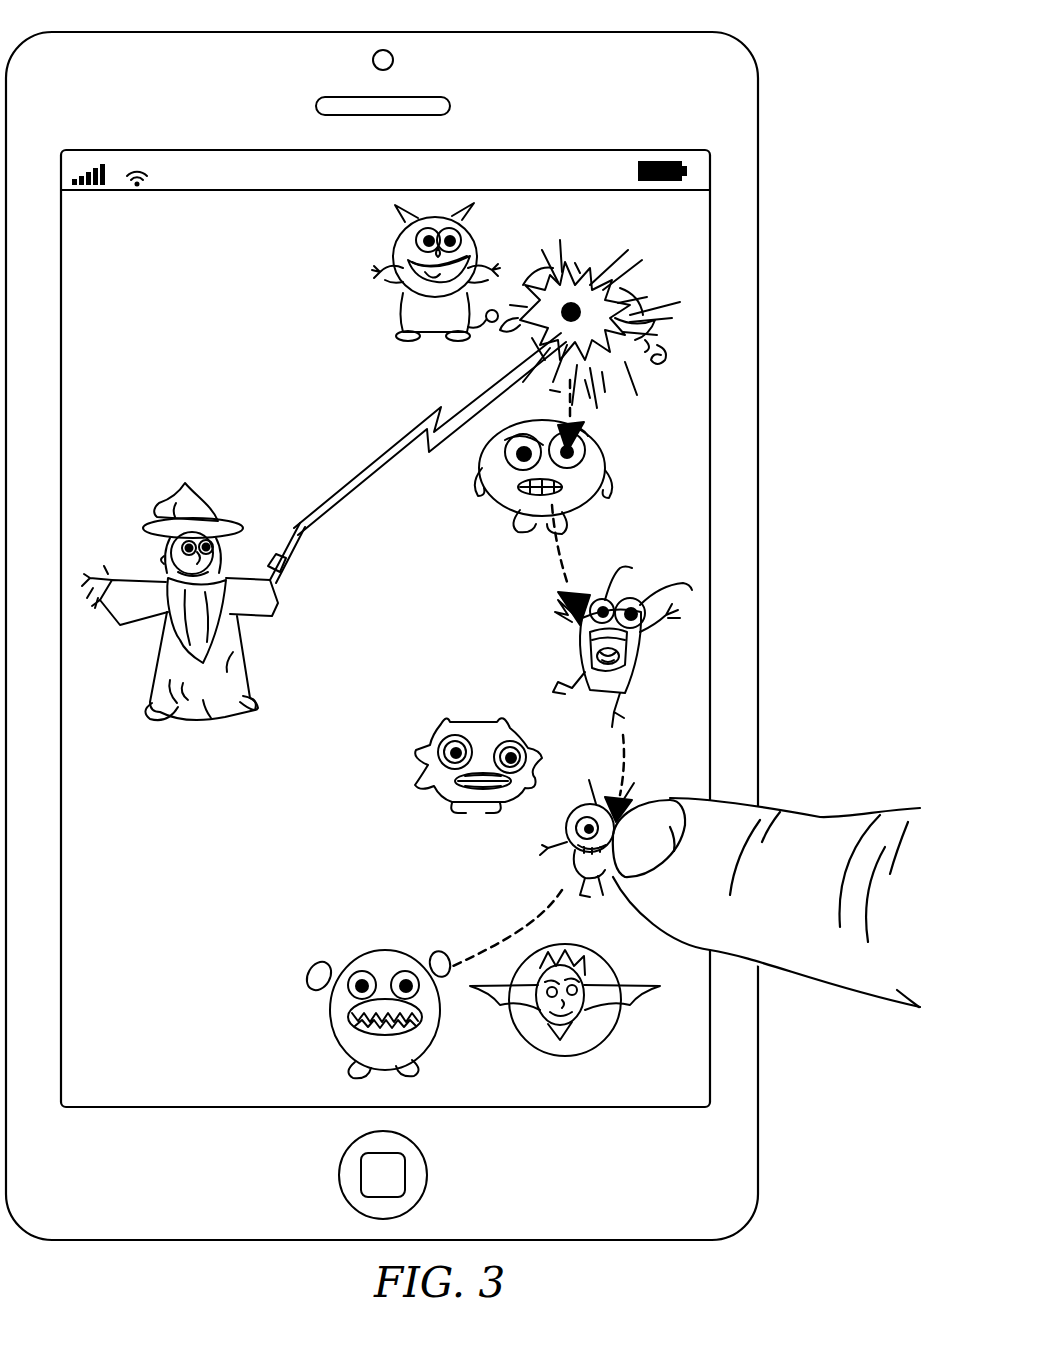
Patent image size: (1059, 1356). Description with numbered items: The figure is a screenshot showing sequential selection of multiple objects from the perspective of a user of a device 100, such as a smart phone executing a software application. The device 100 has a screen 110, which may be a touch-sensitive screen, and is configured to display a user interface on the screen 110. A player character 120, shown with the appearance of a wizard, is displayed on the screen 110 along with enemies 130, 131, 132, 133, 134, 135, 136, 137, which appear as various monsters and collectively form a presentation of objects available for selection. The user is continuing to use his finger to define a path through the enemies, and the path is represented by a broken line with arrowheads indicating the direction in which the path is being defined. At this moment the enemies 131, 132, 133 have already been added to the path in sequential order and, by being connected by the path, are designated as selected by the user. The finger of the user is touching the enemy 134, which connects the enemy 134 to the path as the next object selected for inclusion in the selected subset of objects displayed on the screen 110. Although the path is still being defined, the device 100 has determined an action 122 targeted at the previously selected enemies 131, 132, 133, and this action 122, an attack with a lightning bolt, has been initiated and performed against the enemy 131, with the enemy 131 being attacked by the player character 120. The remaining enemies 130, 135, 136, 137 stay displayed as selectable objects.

The device 100 is at (119, 32).
The screen 110 is at (174, 150).
The player character 120 is at (170, 484).
The action 122 is at (406, 433).
The enemy 130 is at (378, 236).
The enemy 131 is at (605, 240).
The enemy 132 is at (614, 445).
The enemy 133 is at (570, 634).
The enemy 134 is at (540, 872).
The enemy 135 is at (306, 956).
The enemy 136 is at (616, 1045).
The enemy 137 is at (436, 721).